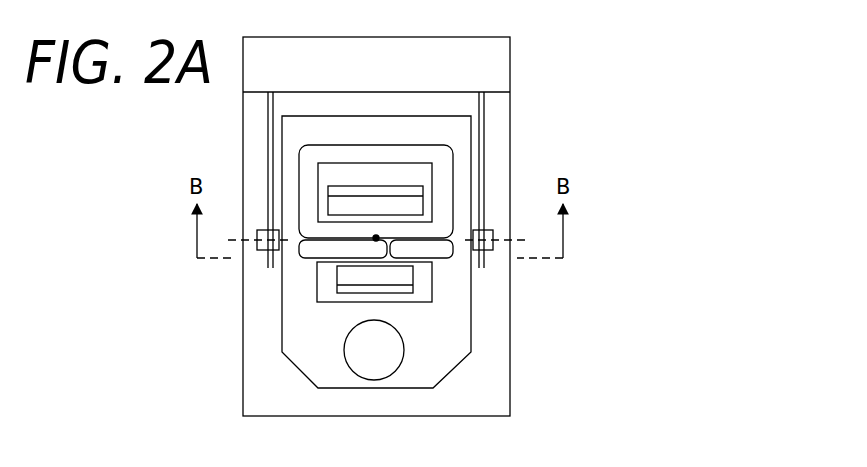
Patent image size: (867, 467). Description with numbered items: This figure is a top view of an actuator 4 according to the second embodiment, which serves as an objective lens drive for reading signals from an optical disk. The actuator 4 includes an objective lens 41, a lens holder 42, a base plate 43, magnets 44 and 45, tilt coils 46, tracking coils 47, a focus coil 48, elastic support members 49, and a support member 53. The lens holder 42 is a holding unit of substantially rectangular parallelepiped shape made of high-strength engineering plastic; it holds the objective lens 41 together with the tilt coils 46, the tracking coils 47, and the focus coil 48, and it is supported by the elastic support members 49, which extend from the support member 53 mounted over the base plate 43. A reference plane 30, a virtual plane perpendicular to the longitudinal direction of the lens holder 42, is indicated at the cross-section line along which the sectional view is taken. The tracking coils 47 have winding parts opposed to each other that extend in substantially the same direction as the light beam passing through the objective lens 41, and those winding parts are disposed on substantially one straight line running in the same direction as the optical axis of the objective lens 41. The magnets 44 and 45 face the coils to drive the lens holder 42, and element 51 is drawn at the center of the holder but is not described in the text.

The actuator 4 is at (476, 21).
The reference plane 30 is at (522, 240).
The objective lens 41 is at (353, 353).
The lens holder 42 is at (452, 357).
The base plate 43 is at (498, 396).
The magnet 44 is at (400, 280).
The magnet 45 is at (362, 205).
The tilt coil 46 is at (440, 258).
The tracking coil 47 is at (313, 258).
The focus coil 48 is at (397, 152).
The guide pins 49 is at (268, 112).
The inner rectangular member 51 is at (376, 238).
The support member 53 is at (503, 58).